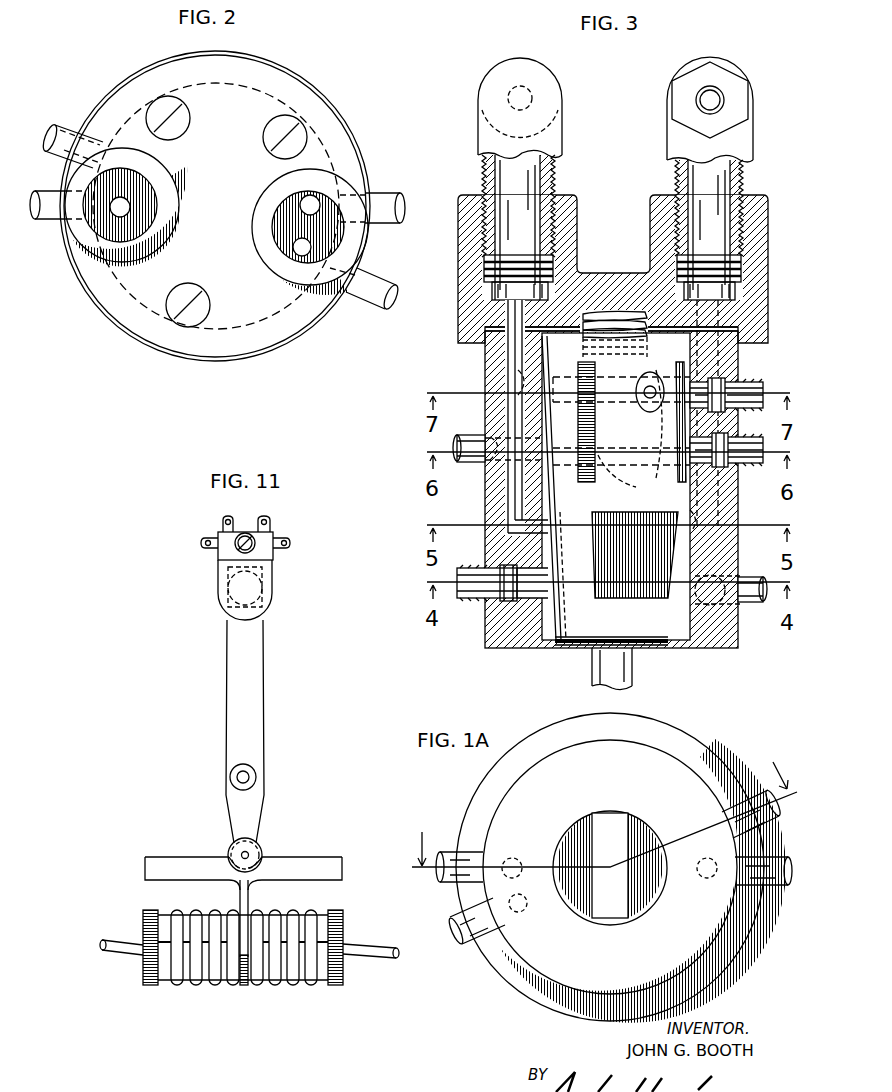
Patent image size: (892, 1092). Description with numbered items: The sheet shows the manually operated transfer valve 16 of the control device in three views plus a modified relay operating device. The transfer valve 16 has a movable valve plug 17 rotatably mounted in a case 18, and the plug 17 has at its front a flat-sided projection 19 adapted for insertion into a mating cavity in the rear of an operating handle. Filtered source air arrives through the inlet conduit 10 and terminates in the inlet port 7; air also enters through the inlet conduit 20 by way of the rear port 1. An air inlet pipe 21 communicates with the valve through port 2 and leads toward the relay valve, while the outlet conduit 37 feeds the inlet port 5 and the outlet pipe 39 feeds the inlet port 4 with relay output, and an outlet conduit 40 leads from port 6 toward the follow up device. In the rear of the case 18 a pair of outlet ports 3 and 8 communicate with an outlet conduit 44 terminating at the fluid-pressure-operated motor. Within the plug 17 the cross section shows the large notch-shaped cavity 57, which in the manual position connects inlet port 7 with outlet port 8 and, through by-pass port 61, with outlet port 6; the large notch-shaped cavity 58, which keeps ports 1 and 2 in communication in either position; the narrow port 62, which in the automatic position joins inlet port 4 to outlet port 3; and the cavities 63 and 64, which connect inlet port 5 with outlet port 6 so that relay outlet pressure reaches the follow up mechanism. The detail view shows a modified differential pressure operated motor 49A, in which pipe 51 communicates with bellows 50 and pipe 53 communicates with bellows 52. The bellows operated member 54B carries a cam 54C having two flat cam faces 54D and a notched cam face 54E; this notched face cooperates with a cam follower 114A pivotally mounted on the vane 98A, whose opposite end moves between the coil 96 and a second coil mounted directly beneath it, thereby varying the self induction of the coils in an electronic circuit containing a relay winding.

In FIG. 2, the port 1 is at (124, 206).
In FIG. 3, the port 1 is at (688, 512).
In FIG. 1A, the port 1 is at (710, 860).
In FIG. 3, the port 2 is at (728, 575).
In FIG. 2, the outlet port 3 is at (305, 198).
In FIG. 3, the outlet port 3 is at (510, 530).
In FIG. 1A, the outlet port 3 is at (516, 860).
In FIG. 3, the inlet port 4 is at (500, 600).
In FIG. 3, the inlet port 5 is at (708, 445).
In FIG. 3, the port 6 is at (705, 385).
In FIG. 3, the inlet port 7 is at (490, 468).
In FIG. 2, the outlet port 8 is at (298, 247).
In FIG. 3, the outlet port 8 is at (505, 378).
In FIG. 1A, the outlet port 8 is at (526, 906).
In FIG. 2, the inlet conduit 10 is at (382, 276).
In FIG. 3, the inlet conduit 10 is at (475, 435).
In FIG. 1A, the inlet conduit 10 is at (468, 917).
In FIG. 2, the transfer valve 16 is at (98, 336).
In FIG. 3, the transfer valve 16 is at (480, 652).
In FIG. 1A, the transfer valve 16 is at (506, 998).
In FIG. 3, the valve plug 17 is at (632, 645).
In FIG. 1A, the valve plug 17 is at (645, 895).
In FIG. 2, the case 18 is at (300, 104).
In FIG. 3, the case 18 is at (712, 645).
In FIG. 1A, the case 18 is at (664, 762).
In FIG. 3, the flat-sided projection 19 is at (598, 673).
In FIG. 1A, the flat-sided projection 19 is at (603, 835).
In FIG. 3, the inlet conduit 20 is at (724, 100).
In FIG. 2, the air inlet pipe 21 is at (55, 210).
In FIG. 3, the air inlet pipe 21 is at (744, 604).
In FIG. 1A, the air inlet pipe 21 is at (760, 857).
In FIG. 3, the outlet conduit 37 is at (746, 464).
In FIG. 1A, the outlet conduit 37 is at (740, 812).
In FIG. 2, the outlet pipe 39 is at (385, 200).
In FIG. 3, the outlet pipe 39 is at (478, 568).
In FIG. 1A, the outlet pipe 39 is at (470, 853).
In FIG. 2, the outlet conduit 40 is at (60, 124).
In FIG. 3, the outlet conduit 40 is at (752, 382).
In FIG. 3, the outlet conduit 44 is at (505, 98).
In FIG. 3, the notch-shaped cavity 57 is at (621, 436).
In FIG. 3, the notch-shaped cavity 58 is at (618, 592).
In FIG. 3, the by-pass port 61 is at (650, 386).
In FIG. 3, the narrow port 62 is at (560, 520).
In FIG. 3, the cavity 63 is at (676, 430).
In FIG. 3, the cavity 64 is at (590, 432).
In FIG. 11, the coil 96 is at (232, 592).
In FIG. 11, the vane 98A is at (253, 728).
In FIG. 11, the cam follower 114A is at (258, 845).
In FIG. 11, the bellows operated member 54B is at (252, 893).
In FIG. 11, the cam 54C is at (150, 870).
In FIG. 11, the flat cam faces 54D is at (200, 857).
In FIG. 11, the notched cam face 54E is at (232, 878).
In FIG. 11, the differential pressure operated motor 49A is at (248, 986).
In FIG. 11, the bellows 50 is at (198, 972).
In FIG. 11, the pipe 51 is at (100, 946).
In FIG. 11, the bellows 52 is at (290, 975).
In FIG. 11, the pipe 53 is at (395, 950).